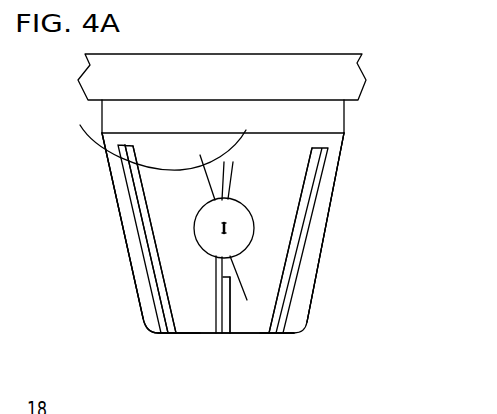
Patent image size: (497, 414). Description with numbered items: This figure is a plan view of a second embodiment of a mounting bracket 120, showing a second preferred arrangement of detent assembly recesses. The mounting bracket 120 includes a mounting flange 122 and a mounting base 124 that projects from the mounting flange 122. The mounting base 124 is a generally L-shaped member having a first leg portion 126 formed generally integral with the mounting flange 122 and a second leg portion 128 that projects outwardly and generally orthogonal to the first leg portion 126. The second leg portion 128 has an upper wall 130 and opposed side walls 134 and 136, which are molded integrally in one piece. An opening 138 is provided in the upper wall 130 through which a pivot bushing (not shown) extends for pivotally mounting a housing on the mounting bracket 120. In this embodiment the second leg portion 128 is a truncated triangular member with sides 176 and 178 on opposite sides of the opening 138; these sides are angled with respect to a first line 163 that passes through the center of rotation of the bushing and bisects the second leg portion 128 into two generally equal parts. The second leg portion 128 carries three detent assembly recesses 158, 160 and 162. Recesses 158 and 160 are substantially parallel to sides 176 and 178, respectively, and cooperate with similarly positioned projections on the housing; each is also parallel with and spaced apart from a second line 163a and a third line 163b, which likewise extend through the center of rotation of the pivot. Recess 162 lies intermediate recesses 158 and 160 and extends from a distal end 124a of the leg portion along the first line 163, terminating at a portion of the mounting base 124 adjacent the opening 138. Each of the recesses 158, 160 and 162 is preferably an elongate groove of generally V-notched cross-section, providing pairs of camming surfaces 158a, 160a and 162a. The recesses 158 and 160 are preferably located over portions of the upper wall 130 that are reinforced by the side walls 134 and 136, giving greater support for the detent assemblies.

The mounting bracket 120 is at (163, 361).
The mounting flange 122 is at (298, 65).
The mounting base 124 is at (198, 351).
The distal end 124a is at (273, 335).
The first leg portion 126 is at (214, 93).
The second leg portion 128 is at (178, 142).
The upper wall 130 is at (153, 257).
The side wall 134 is at (123, 228).
The side wall 136 is at (340, 166).
The opening 138 is at (240, 215).
The detent assembly recess 158 is at (293, 290).
The camming surfaces 158a is at (316, 163).
The detent assembly recess 160 is at (148, 333).
The camming surfaces 160a is at (152, 218).
The detent assembly recess 162 is at (233, 337).
The camming surfaces 162a is at (225, 290).
The first line 163 is at (225, 165).
The second line 163a is at (217, 280).
The third line 163b is at (142, 140).
The side 176 is at (333, 190).
The side 178 is at (113, 192).